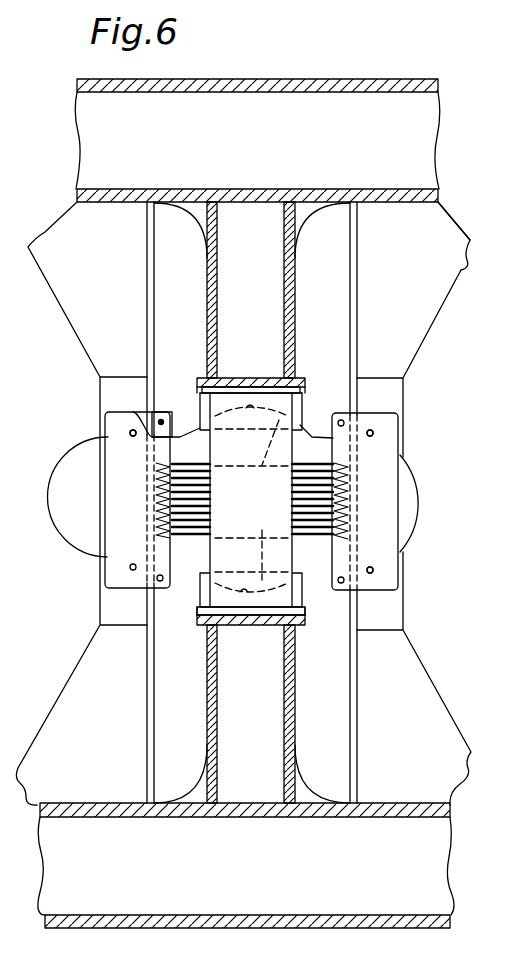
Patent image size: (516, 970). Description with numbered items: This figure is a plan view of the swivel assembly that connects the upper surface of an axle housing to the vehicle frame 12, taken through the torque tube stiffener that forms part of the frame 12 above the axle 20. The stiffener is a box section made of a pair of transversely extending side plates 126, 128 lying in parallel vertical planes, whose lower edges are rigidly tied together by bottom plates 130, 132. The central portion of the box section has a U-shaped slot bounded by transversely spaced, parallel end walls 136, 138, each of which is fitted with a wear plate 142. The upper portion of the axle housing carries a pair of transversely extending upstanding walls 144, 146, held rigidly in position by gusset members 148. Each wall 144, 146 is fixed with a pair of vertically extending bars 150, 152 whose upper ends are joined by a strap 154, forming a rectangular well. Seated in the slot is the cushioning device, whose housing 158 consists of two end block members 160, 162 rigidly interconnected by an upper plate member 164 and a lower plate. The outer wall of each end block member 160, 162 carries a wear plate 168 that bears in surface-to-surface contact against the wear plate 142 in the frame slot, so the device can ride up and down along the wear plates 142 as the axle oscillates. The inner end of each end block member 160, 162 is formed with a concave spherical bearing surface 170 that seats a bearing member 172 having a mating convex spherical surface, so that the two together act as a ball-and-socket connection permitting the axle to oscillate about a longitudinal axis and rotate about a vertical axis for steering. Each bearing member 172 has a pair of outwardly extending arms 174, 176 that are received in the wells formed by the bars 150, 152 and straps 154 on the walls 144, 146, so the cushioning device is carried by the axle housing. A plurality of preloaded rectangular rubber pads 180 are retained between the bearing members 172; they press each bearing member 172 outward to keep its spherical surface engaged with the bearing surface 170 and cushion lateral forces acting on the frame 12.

The vehicle frame 12 is at (210, 79).
The axle 20 is at (437, 241).
The bottom plate 130 is at (263, 216).
The gusset members 148 is at (84, 308).
The upstanding wall 144 is at (152, 712).
The upstanding wall 146 is at (350, 715).
The bottom plate 132 is at (270, 652).
The side plate 126 is at (207, 313).
The side plate 128 is at (295, 325).
The concave spherical bearing surface 170 is at (252, 398).
The housing 158 is at (194, 403).
The end wall 136 is at (292, 380).
The wear plate 142 is at (302, 380).
The wear plate 168 is at (305, 392).
The end wall 138 is at (197, 624).
The bearing member 172 is at (251, 498).
The arm 174 is at (197, 450).
The rubber pads 180 is at (178, 512).
The arm 176 is at (335, 463).
The vertically extending bar 152 is at (165, 592).
The vertically extending bar 150 is at (161, 418).
The upper plate member 164 is at (170, 481).
The end block member 160 is at (330, 447).
The end block member 162 is at (320, 558).
The strap 154 is at (100, 440).